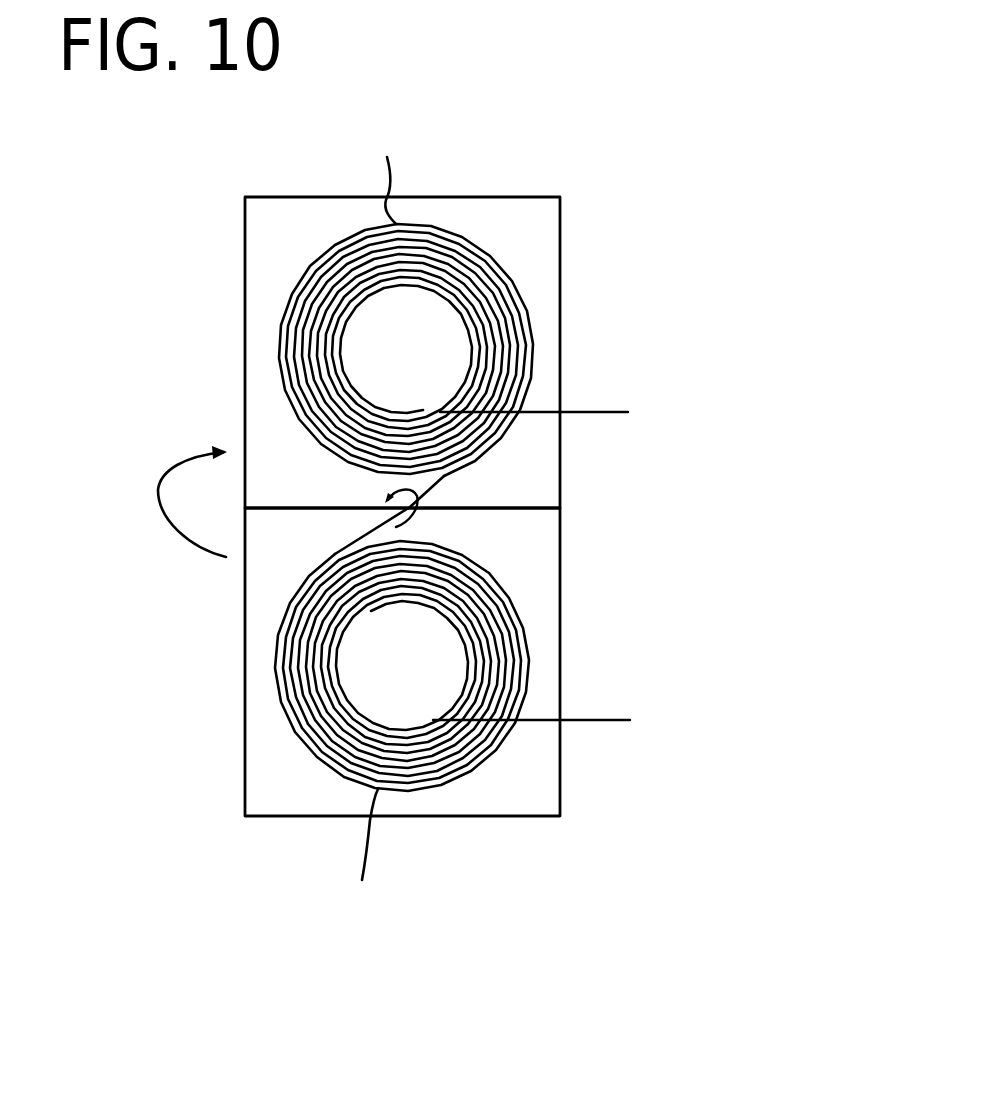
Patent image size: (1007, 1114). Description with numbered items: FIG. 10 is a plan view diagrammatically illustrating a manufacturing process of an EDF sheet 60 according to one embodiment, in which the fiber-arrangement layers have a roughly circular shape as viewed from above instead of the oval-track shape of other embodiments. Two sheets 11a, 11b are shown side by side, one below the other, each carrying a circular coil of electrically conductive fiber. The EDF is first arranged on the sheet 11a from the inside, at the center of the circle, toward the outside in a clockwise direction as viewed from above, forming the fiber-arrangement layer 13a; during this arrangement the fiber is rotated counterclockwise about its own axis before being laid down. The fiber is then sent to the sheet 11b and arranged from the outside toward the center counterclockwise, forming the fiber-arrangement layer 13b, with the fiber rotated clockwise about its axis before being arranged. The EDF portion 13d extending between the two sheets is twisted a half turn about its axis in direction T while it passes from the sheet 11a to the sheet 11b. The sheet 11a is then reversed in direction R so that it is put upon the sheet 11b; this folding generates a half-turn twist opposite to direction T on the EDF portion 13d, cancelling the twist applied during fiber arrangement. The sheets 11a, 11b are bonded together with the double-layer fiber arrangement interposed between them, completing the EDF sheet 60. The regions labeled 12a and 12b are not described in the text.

The EDF sheet 60 is at (726, 171).
The sheet 11a is at (513, 818).
The sheet 11b is at (505, 197).
The lower coil 12a is at (540, 595).
The upper coil 12b is at (538, 261).
The fiber-arrangement layer 13a is at (348, 864).
The fiber-arrangement layer 13b is at (388, 164).
The EDF portion 13d is at (452, 480).
The direction of twist T is at (405, 520).
The reversing direction R is at (158, 487).